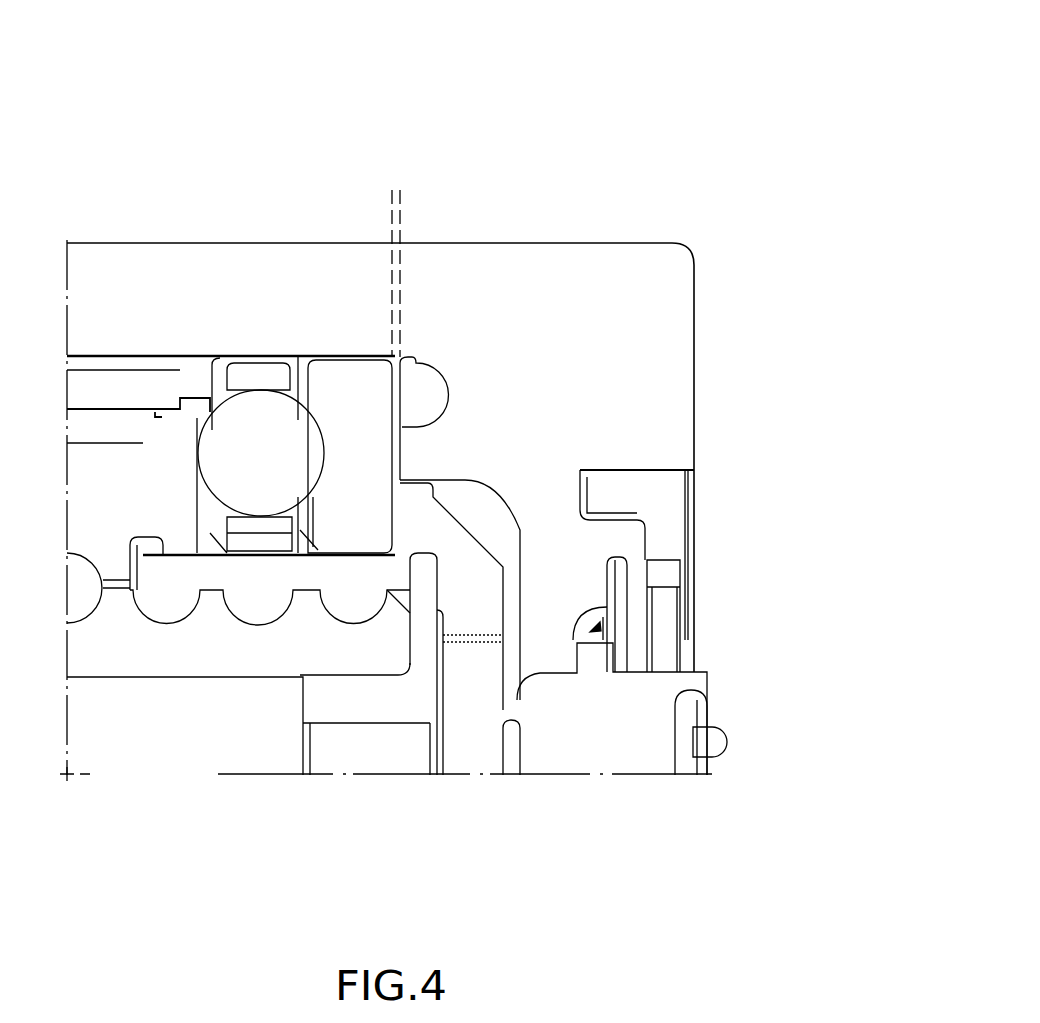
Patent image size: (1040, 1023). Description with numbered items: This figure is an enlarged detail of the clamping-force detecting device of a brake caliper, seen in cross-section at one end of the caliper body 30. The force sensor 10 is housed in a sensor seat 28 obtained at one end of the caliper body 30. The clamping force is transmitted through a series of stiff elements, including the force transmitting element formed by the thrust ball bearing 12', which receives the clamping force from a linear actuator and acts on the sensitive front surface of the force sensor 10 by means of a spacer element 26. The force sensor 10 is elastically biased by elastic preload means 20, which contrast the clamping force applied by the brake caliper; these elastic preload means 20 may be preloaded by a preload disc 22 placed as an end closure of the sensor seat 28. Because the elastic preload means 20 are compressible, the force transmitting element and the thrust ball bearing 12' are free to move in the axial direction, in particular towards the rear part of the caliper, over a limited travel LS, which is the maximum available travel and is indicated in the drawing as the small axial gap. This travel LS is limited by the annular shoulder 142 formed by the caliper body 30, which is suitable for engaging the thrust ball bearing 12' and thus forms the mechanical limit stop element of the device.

The force sensor 10 is at (610, 737).
The thrust ball bearing 12' is at (293, 326).
The annular shoulder 142 is at (400, 455).
The caliper body 30 is at (577, 243).
The preload disc 22 is at (665, 500).
The sensor seat 28 is at (592, 630).
The elastic preload means 20 is at (630, 647).
The spacer element 26 is at (460, 555).
The maximum travel LS is at (435, 187).